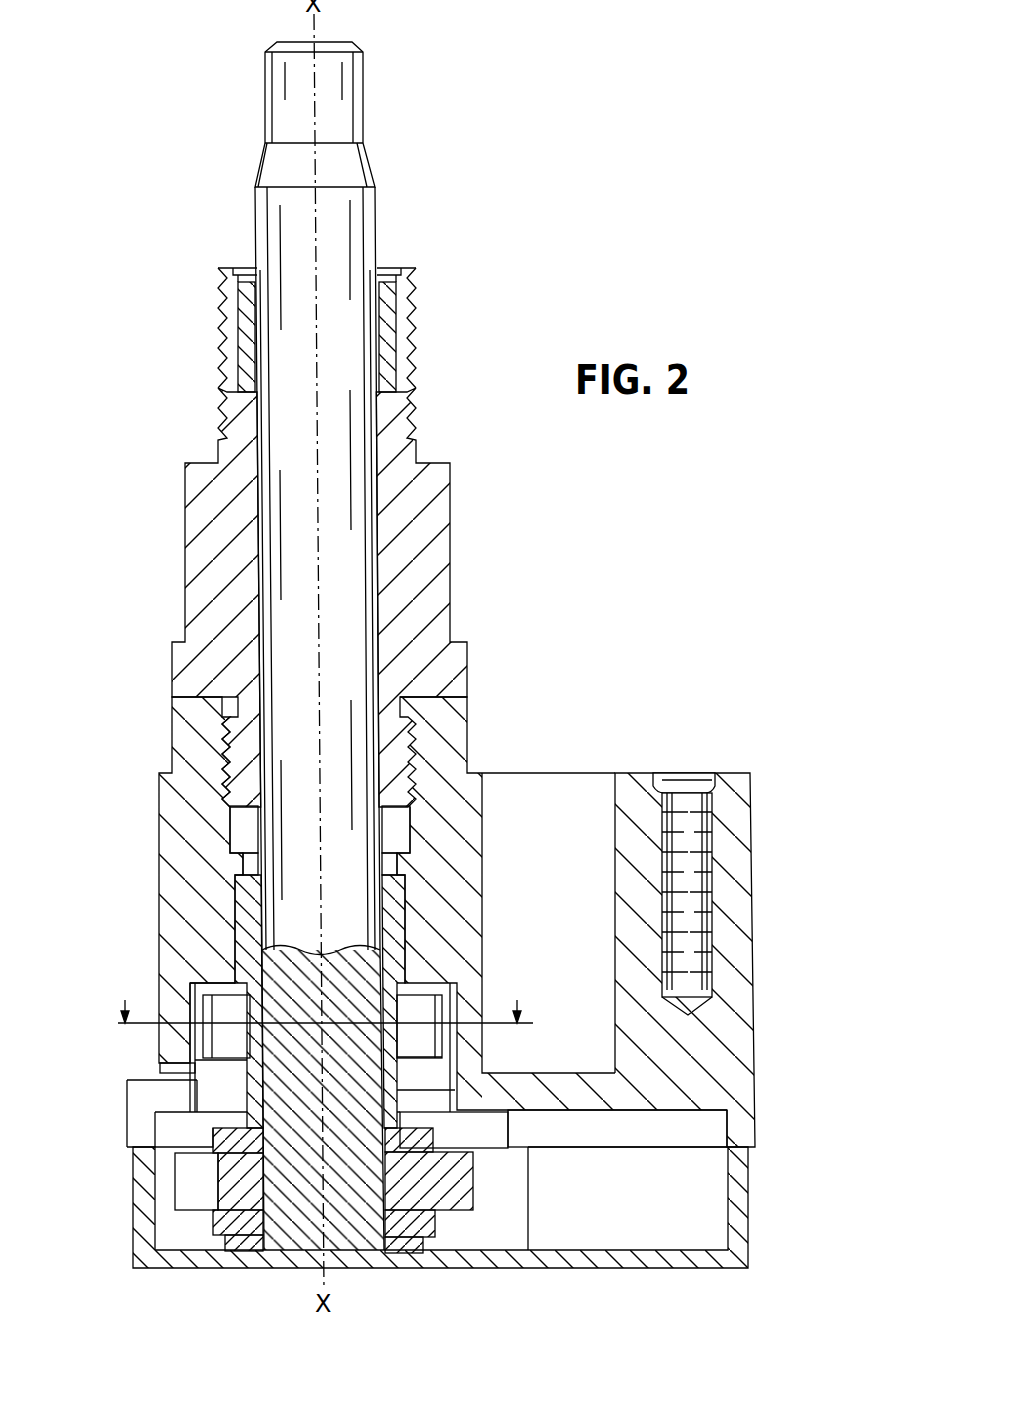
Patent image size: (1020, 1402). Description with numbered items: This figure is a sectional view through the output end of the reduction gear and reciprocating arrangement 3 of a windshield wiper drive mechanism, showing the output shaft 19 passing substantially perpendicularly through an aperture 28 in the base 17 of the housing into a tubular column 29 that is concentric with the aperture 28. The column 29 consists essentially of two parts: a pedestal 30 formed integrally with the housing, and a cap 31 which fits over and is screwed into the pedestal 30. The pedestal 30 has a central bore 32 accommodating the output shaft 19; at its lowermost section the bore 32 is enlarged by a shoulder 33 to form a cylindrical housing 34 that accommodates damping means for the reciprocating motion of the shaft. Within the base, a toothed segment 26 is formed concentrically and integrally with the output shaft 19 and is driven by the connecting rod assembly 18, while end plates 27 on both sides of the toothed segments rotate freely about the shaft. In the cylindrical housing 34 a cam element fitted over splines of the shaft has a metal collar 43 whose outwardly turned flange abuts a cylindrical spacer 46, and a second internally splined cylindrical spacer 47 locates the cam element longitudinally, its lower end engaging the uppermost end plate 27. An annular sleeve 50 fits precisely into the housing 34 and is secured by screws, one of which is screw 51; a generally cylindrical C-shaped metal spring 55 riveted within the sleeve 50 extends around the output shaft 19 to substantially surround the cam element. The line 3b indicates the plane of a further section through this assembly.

The reduction gear and reciprocating arrangement 3 is at (790, 1109).
The section line 3b is at (321, 1000).
The base 17 is at (738, 1042).
The connecting rod assembly 18 is at (495, 1196).
The output shaft 19 is at (360, 222).
The toothed segment 26 is at (185, 1188).
The end plates 27 is at (433, 1133).
The aperture 28 is at (185, 1112).
The tubular column 29 is at (480, 561).
The pedestal 30 is at (170, 838).
The cap 31 is at (195, 561).
The central bore 32 is at (238, 834).
The shoulder 33 is at (220, 980).
The cylindrical housing 34 is at (208, 1090).
The collar 43 is at (438, 1066).
The cylindrical spacer 46 is at (400, 913).
The cylindrical spacer 47 is at (508, 1114).
The annular sleeve 50 is at (428, 990).
The screw 51 is at (168, 1070).
The C-shaped metal spring 55 is at (215, 1039).